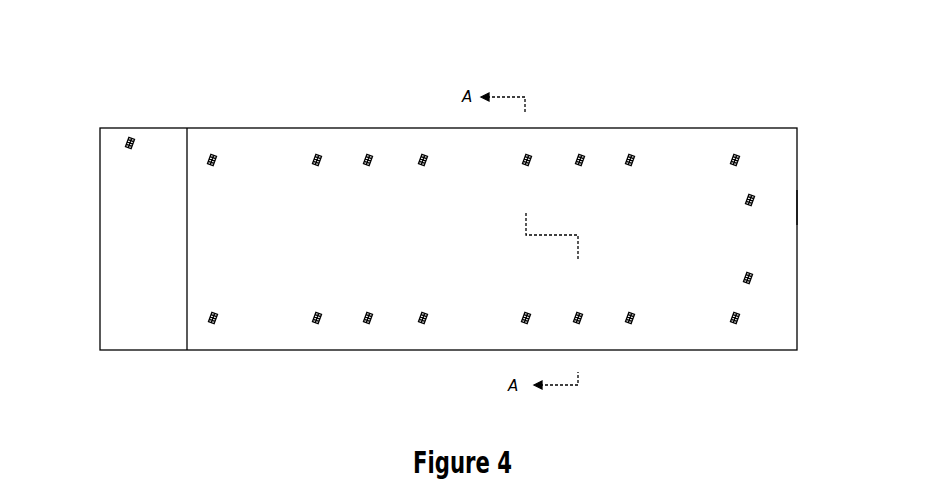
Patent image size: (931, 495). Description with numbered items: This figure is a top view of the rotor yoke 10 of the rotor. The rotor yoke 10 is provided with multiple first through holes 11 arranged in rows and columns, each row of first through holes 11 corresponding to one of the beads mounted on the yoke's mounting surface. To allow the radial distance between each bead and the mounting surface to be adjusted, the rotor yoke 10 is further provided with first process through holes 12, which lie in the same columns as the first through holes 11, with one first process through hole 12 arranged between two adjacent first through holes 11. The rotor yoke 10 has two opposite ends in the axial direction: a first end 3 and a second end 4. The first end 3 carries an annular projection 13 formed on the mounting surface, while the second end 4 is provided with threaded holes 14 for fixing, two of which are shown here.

The rotor yoke 10 is at (461, 56).
The first end 3 is at (98, 242).
The second end 4 is at (798, 207).
The first through hole 11 is at (212, 160).
The first process through hole 12 is at (368, 160).
The annular projection 13 is at (130, 143).
The threaded hole 14 is at (750, 200).